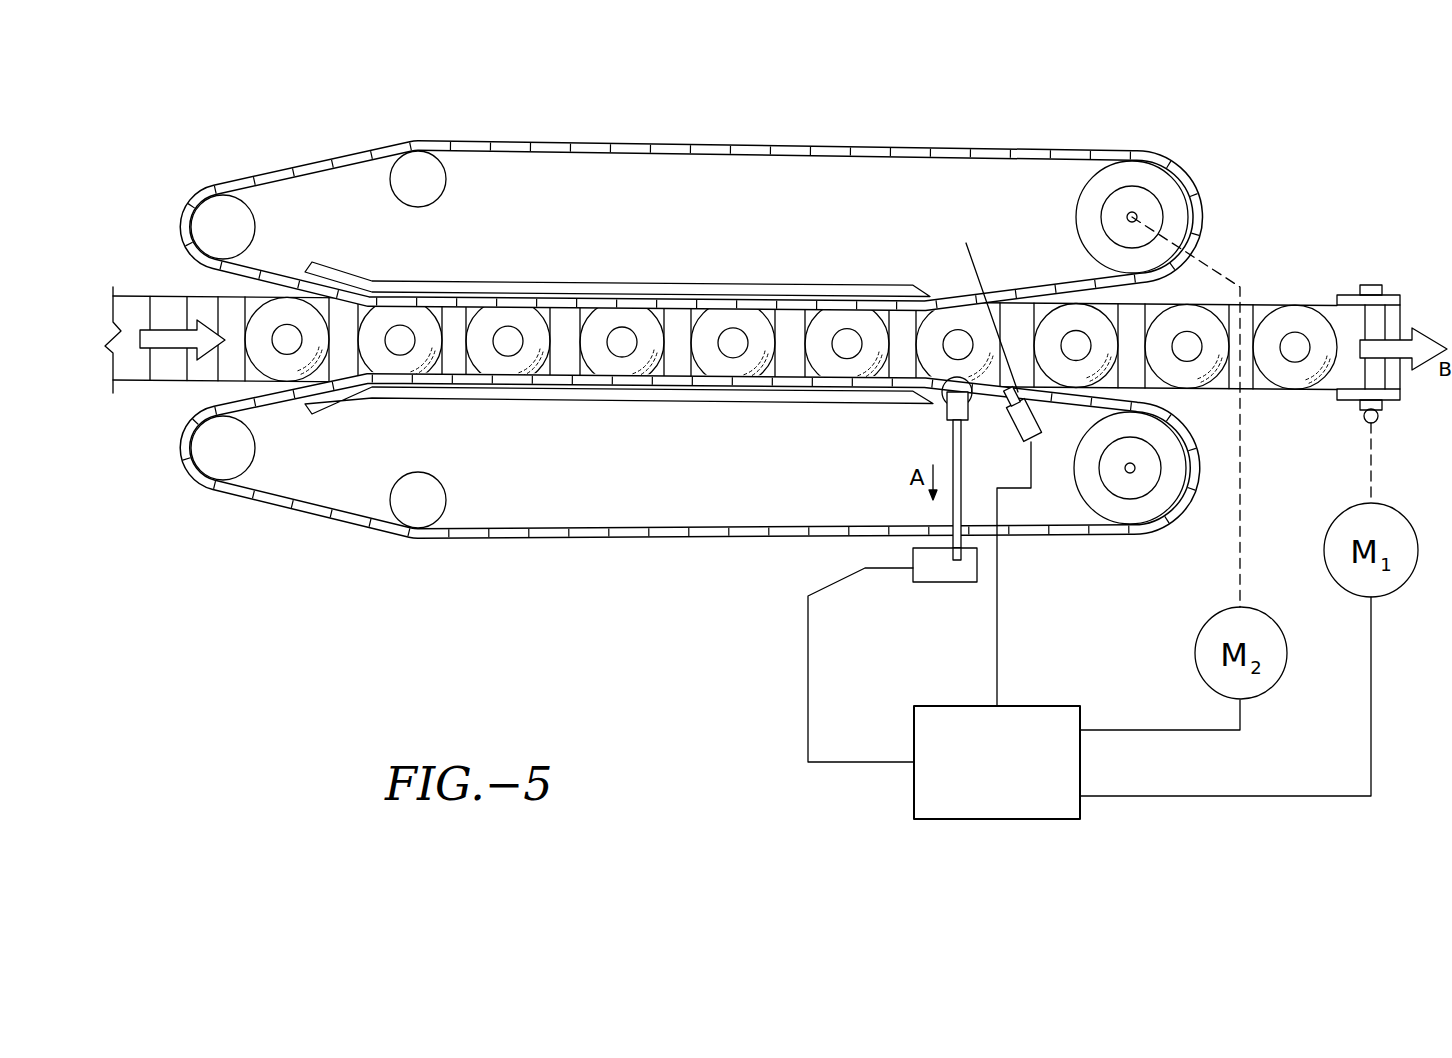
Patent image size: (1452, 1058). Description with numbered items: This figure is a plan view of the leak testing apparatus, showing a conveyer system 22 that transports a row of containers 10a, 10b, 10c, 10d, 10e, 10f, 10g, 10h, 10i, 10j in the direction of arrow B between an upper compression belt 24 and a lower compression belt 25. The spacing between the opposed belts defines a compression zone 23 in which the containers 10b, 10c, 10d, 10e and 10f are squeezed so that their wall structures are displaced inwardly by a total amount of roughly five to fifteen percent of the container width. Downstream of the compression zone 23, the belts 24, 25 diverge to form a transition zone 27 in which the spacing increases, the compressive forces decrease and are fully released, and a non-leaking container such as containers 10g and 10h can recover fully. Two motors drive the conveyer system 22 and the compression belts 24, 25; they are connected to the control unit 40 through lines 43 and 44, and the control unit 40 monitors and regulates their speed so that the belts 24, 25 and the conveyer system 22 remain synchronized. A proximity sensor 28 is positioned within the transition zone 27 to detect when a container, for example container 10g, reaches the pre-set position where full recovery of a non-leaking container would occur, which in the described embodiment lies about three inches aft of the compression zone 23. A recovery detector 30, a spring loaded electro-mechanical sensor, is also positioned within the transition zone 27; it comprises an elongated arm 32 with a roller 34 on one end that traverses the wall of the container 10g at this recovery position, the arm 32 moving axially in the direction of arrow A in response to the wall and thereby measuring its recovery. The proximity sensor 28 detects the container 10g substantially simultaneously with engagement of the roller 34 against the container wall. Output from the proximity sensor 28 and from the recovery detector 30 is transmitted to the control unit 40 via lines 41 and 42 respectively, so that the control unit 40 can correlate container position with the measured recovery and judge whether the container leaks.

The container 10a is at (267, 312).
The container 10b is at (398, 315).
The container 10c is at (508, 315).
The container 10d is at (620, 315).
The container 10e is at (731, 315).
The container 10f is at (845, 315).
The container 10g is at (957, 322).
The container 10h is at (1062, 322).
The container 10i is at (1187, 382).
The container 10j is at (1296, 322).
The conveyer system 22 is at (163, 380).
The compression zone 23 is at (455, 318).
The compression belt 24 is at (565, 133).
The compression belt 25 is at (490, 547).
The transition zone 27 is at (996, 300).
The proximity sensor 28 is at (1013, 416).
The recovery detector 30 is at (951, 454).
The elongated arm 32 is at (951, 518).
The roller 34 is at (949, 414).
The control unit 40 is at (986, 822).
The line 41 is at (997, 655).
The line 42 is at (807, 688).
The line 43 is at (1153, 728).
The line 44 is at (1371, 660).